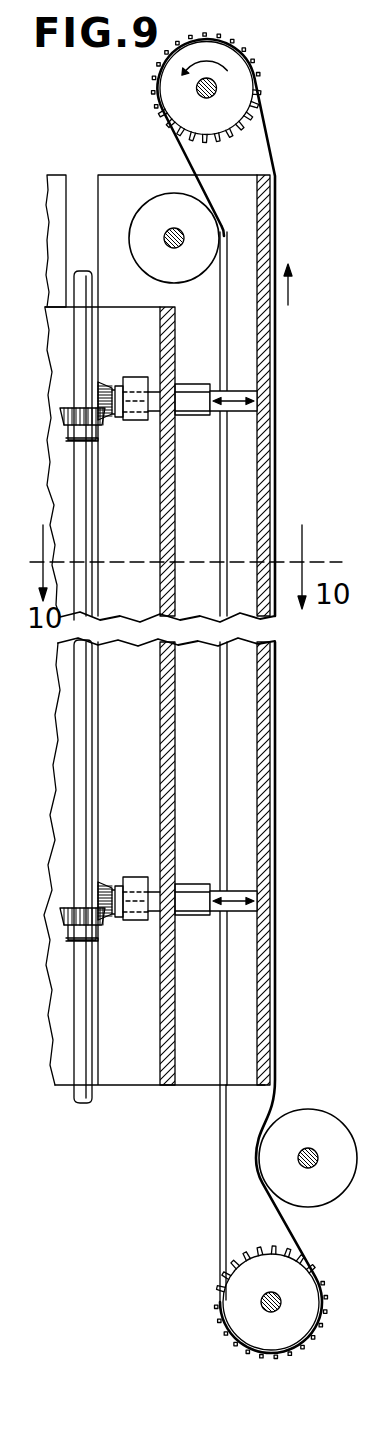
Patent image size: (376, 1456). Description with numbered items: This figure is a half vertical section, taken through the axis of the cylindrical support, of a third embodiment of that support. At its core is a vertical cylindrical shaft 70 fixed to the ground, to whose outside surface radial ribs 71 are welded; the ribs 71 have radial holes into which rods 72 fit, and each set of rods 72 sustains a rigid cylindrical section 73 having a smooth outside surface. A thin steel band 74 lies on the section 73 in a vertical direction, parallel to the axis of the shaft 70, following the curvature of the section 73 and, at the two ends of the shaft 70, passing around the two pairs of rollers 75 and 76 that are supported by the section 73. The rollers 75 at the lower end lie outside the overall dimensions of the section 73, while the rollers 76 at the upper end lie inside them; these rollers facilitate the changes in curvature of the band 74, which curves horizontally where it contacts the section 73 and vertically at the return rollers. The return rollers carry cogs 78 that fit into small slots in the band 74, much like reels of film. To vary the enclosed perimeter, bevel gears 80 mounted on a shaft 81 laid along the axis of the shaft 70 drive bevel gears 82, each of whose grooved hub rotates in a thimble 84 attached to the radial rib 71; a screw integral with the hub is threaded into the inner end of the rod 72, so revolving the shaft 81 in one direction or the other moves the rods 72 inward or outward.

The vertical cylindrical shaft 70 is at (172, 775).
The radial rib 71 is at (191, 391).
The rod 72 is at (240, 390).
The rigid cylindrical section 73 is at (265, 222).
The thin steel band 74 is at (272, 140).
The roller 75 is at (290, 1122).
The roller 76 is at (238, 80).
The cog 78 is at (233, 138).
The bevel gear 80 is at (101, 431).
The shaft 81 is at (87, 289).
The bevel gear 82 is at (108, 381).
The thimble 84 is at (147, 422).